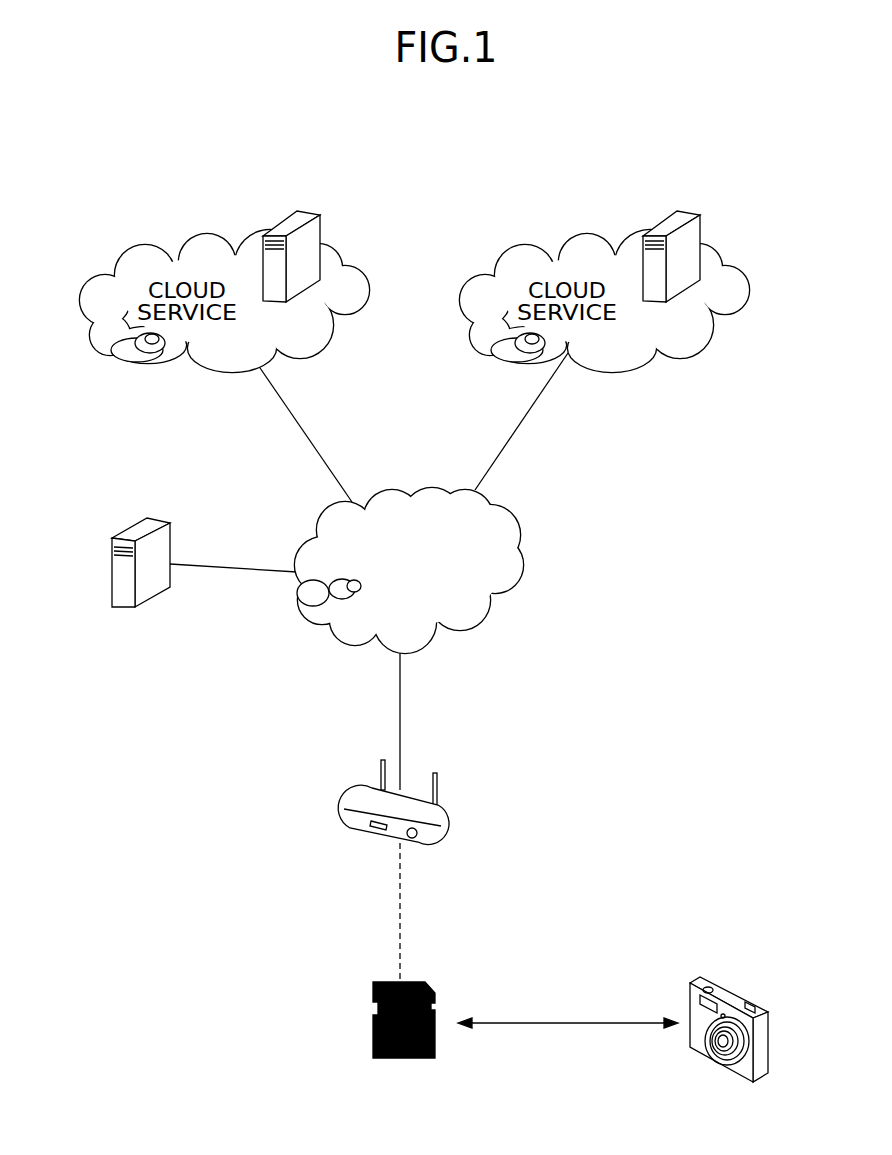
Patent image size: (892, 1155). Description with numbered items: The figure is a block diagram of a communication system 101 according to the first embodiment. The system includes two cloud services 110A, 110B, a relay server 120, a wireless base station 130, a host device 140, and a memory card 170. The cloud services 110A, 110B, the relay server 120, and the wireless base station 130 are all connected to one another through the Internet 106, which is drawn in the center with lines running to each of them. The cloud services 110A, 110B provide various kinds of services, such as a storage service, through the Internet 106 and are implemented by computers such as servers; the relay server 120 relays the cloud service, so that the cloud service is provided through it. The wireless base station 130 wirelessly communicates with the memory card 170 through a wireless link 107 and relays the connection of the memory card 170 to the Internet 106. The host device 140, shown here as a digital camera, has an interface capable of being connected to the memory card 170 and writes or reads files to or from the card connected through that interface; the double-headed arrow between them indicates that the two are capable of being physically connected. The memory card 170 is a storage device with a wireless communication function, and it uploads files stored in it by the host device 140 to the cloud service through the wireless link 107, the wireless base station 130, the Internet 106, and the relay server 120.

The communication system 101 is at (444, 164).
The Internet 106 is at (393, 489).
The wireless link 107 is at (402, 913).
The cloud service 110A is at (205, 236).
The cloud service 110B is at (585, 236).
The relay server 120 is at (159, 518).
The wireless base station 130 is at (445, 818).
The host device 140 is at (735, 987).
The memory card 170 is at (428, 983).